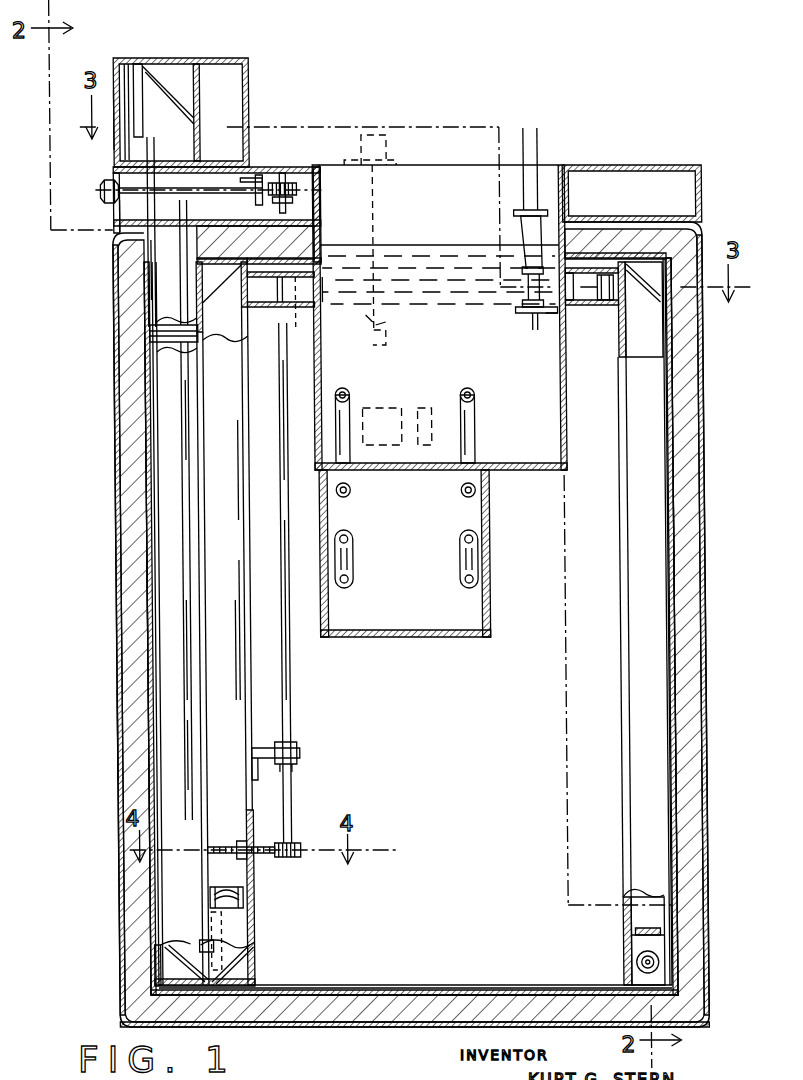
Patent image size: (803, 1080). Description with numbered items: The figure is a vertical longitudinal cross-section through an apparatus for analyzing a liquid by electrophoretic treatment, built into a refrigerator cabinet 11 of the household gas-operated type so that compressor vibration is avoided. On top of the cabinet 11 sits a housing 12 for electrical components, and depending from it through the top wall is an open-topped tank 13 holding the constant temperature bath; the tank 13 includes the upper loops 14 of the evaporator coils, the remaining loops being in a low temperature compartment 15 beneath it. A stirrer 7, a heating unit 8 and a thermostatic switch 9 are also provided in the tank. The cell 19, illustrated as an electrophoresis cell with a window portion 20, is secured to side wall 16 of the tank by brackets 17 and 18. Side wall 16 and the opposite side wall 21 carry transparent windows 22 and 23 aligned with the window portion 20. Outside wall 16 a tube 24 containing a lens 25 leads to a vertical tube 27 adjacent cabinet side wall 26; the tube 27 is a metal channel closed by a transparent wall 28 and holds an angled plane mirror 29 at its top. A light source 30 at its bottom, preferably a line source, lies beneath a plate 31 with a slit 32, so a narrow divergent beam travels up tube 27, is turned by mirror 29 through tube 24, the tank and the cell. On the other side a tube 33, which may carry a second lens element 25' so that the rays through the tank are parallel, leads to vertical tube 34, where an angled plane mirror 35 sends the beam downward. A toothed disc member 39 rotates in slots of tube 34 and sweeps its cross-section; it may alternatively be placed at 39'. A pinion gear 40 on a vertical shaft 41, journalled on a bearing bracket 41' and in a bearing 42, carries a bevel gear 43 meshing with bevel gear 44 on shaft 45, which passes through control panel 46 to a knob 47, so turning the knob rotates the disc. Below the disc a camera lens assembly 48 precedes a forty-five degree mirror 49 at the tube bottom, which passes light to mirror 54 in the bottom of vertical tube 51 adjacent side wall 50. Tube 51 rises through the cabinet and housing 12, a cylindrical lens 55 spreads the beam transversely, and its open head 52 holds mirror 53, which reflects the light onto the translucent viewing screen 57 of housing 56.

The stirrer 7 is at (375, 322).
The heating unit 8 is at (386, 440).
The thermostatic switch 9 is at (426, 440).
The refrigerator cabinet 11 is at (715, 466).
The housing 12 is at (641, 165).
The tank 13 is at (546, 470).
The upper loops of the evaporator coils 14 is at (458, 393).
The low temperature compartment 15 is at (487, 600).
The side wall 16 is at (558, 372).
The bracket 17 is at (535, 318).
The bracket 18 is at (551, 215).
The cell 19 is at (528, 235).
The window portion 20 is at (530, 290).
The side wall 21 is at (320, 376).
The transparent window 22 is at (572, 305).
The transparent window 23 is at (320, 290).
The tube 24 is at (590, 252).
The lens 25 is at (601, 307).
The lens element 25' is at (283, 307).
The side wall 26 is at (678, 518).
The vertical tube 27 is at (617, 495).
The transparent wall 28 is at (655, 340).
The angled plane mirror 29 is at (634, 278).
The light source 30 is at (629, 965).
The plate 31 is at (627, 936).
The slit 32 is at (629, 925).
The tube 33 is at (262, 305).
The vertical tube 34 is at (241, 452).
The angled plane mirror 35 is at (205, 330).
The disc member 39 is at (248, 870).
The disc member 39' is at (229, 941).
The pinion gear 40 is at (290, 857).
The vertical shaft 41 is at (306, 583).
The bearing bracket 41' is at (304, 756).
The bearing 42 is at (293, 180).
The bevel gear 43 is at (301, 200).
The bevel gear 44 is at (263, 182).
The shaft 45 is at (202, 195).
The control panel 46 is at (117, 215).
The knob 47 is at (101, 196).
The camera lens assembly 48 is at (238, 905).
The angled plane mirror 49 is at (250, 964).
The side wall 50 is at (113, 700).
The vertical tube 51 is at (144, 575).
The open head 52 is at (142, 70).
The angled mirror 53 is at (151, 88).
The angled mirror 54 is at (165, 960).
The cylindrical lens 55 is at (172, 322).
The housing 56 is at (250, 76).
The viewing screen 57 is at (106, 80).